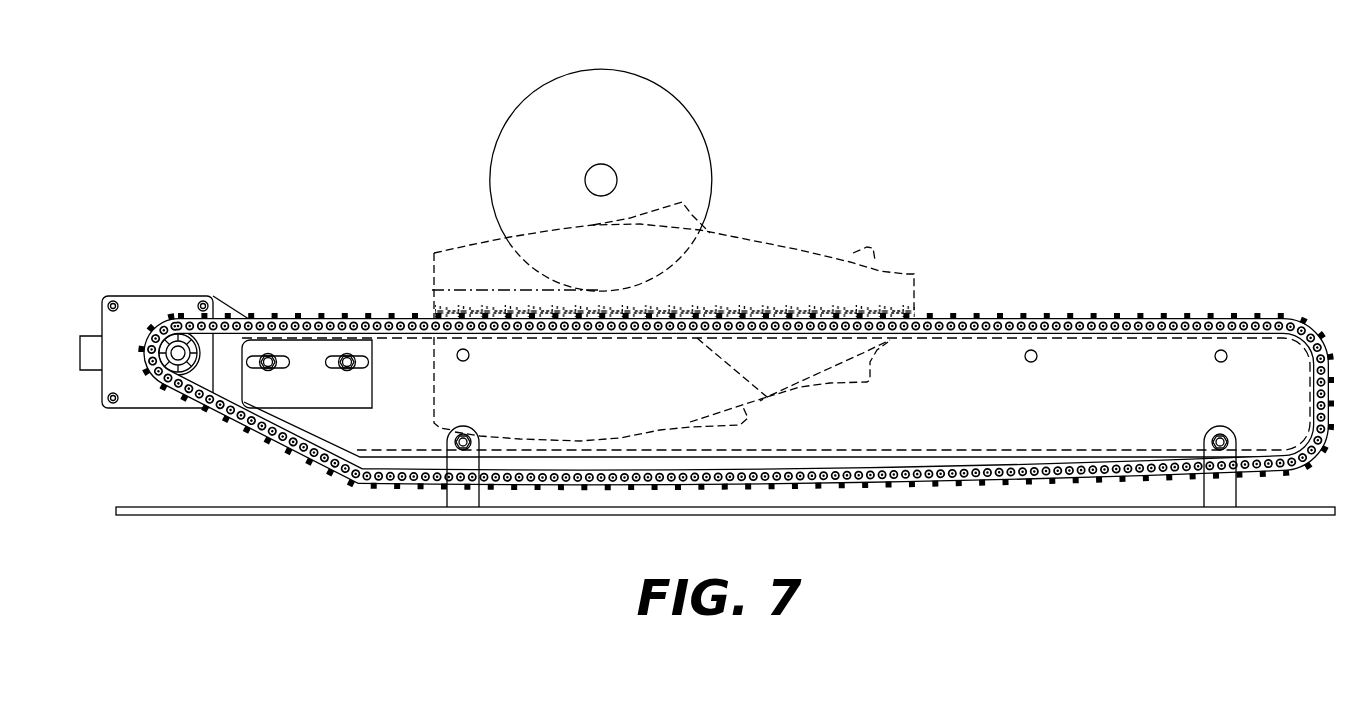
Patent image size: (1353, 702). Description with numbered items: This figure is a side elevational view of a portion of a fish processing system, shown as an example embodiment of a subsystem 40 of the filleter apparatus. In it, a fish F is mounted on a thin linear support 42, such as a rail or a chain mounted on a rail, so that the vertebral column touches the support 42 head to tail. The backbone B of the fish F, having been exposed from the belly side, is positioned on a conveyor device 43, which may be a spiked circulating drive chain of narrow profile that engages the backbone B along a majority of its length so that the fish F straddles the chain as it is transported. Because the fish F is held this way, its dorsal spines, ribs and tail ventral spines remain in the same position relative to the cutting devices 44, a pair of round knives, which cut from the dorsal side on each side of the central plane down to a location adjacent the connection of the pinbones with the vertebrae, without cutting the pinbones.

The subsystem 40 is at (1166, 74).
The thin linear support 42 is at (377, 322).
The conveyor device 43 is at (736, 401).
The cutting devices 44 is at (540, 106).
The backbone B is at (727, 312).
The fish F is at (822, 276).